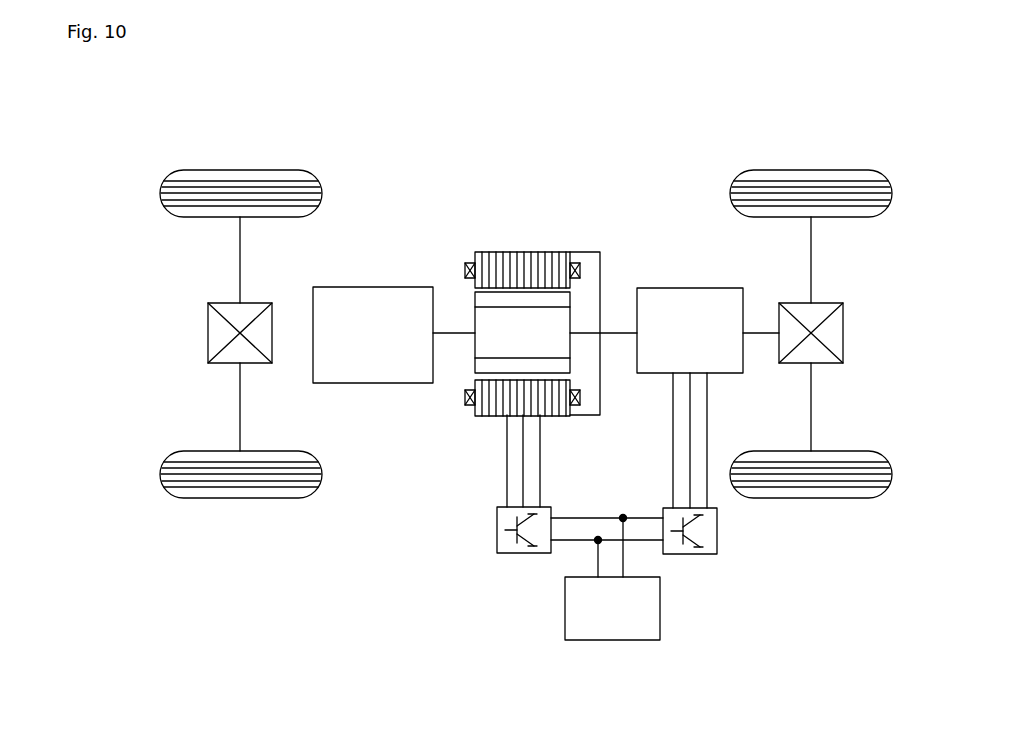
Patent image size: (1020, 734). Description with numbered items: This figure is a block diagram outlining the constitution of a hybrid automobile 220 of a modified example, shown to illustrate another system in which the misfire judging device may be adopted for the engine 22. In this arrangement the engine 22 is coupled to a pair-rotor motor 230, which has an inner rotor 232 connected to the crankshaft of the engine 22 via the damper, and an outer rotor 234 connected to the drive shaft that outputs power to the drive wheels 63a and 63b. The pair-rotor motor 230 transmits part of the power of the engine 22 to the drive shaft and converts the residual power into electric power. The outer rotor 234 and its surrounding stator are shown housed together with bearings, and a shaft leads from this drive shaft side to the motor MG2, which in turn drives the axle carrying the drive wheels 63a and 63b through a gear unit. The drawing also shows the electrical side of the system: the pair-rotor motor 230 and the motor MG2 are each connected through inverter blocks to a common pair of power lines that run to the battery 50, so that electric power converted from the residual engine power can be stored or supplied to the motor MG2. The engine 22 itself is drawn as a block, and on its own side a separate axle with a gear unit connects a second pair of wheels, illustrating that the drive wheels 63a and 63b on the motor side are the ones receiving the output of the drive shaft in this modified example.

The engine 22 is at (370, 383).
The hybrid automobile 220 is at (628, 176).
The pair-rotor motor 230 is at (516, 280).
The inner rotor 232 is at (474, 316).
The outer rotor 234 is at (522, 252).
The motor MG2 is at (690, 288).
The battery 50 is at (660, 605).
The drive wheel 63a is at (810, 170).
The drive wheel 63b is at (810, 498).